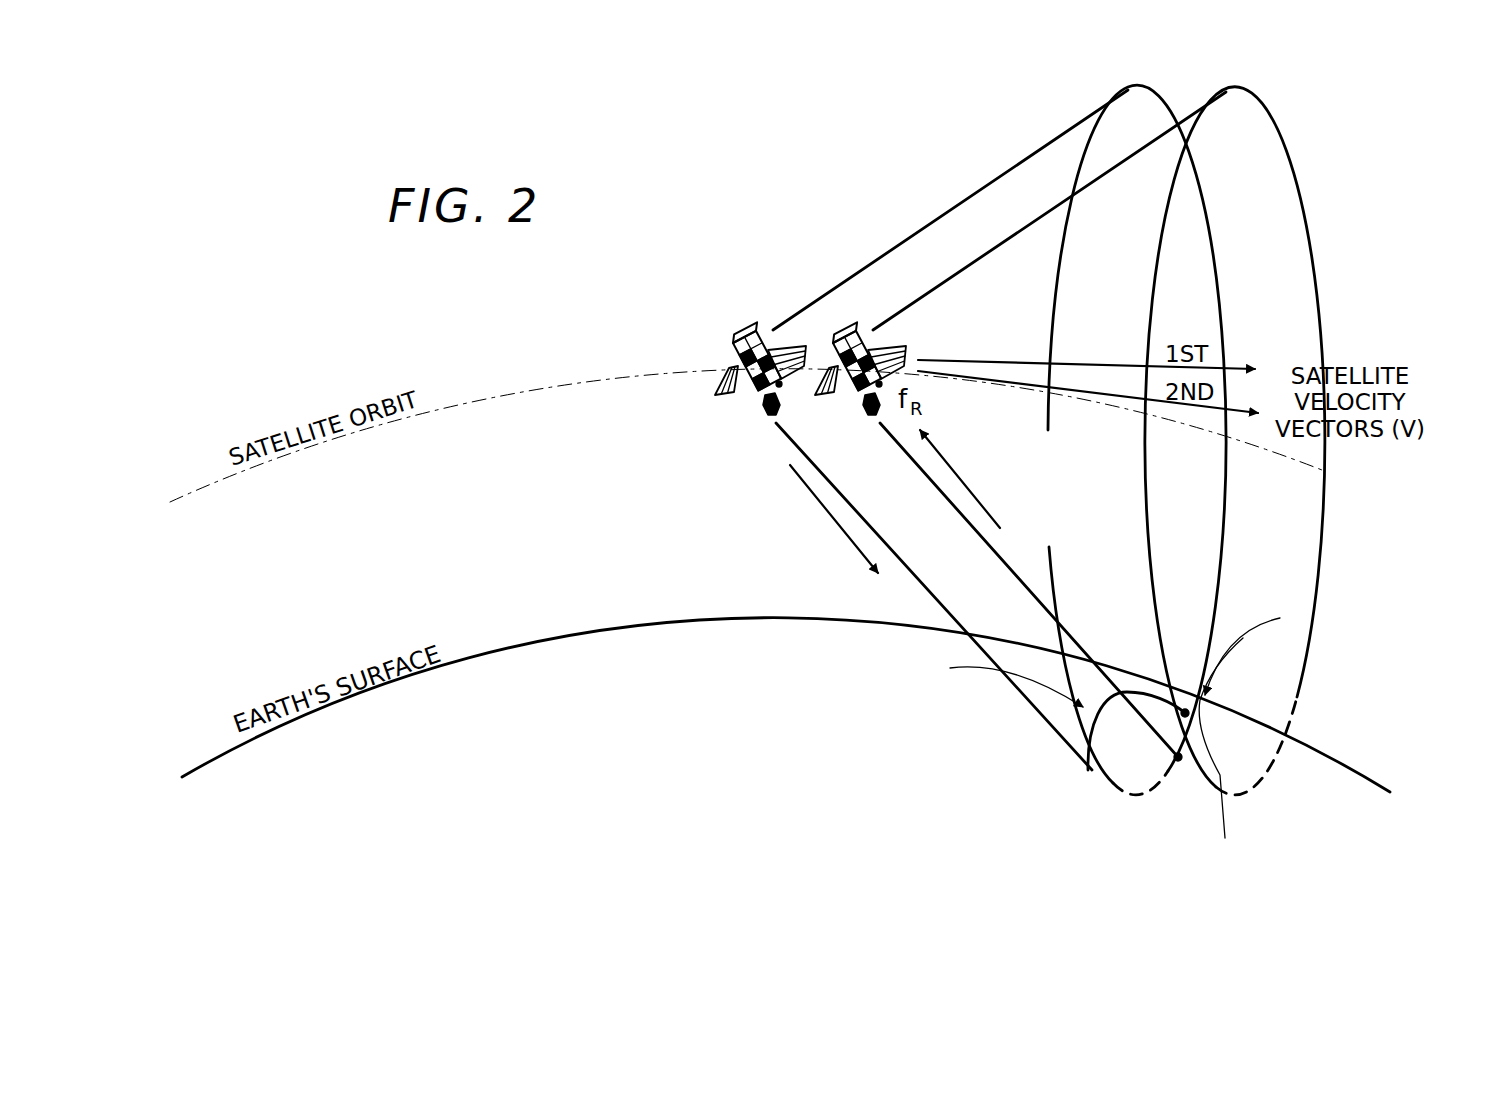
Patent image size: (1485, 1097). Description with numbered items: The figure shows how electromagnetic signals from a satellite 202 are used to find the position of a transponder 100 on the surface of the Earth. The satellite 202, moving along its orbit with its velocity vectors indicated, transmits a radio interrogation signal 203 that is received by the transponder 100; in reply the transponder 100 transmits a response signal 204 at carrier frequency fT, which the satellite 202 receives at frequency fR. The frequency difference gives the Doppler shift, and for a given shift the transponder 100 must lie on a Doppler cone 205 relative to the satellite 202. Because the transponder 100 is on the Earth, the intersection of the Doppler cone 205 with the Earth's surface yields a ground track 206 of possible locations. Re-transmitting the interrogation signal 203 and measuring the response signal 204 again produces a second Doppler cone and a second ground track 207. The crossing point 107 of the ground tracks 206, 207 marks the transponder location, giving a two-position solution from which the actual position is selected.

The transponder 100 is at (1097, 763).
The intersection point of ground tracks 107 is at (1145, 690).
The satellite 202 is at (843, 333).
The interrogation signal 203 is at (790, 462).
The response signal 204 is at (1003, 527).
The Doppler cone 205 is at (1120, 160).
The ground track 206 is at (1088, 727).
The second ground track 207 is at (1192, 728).